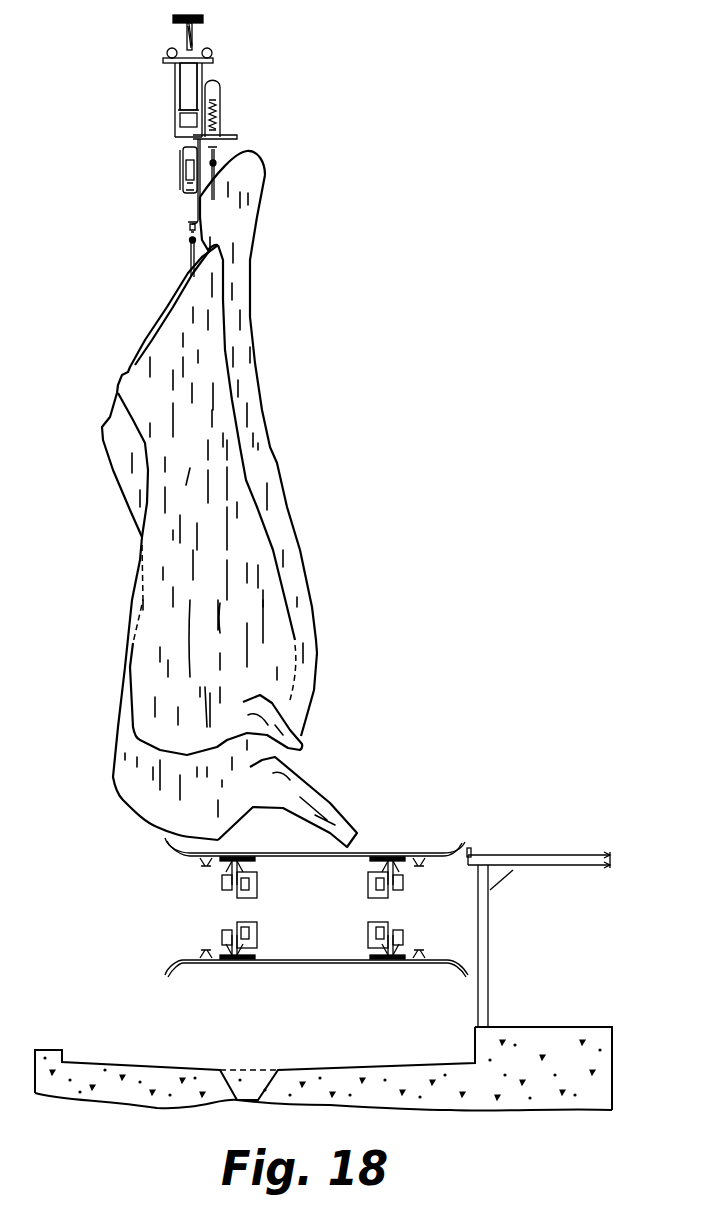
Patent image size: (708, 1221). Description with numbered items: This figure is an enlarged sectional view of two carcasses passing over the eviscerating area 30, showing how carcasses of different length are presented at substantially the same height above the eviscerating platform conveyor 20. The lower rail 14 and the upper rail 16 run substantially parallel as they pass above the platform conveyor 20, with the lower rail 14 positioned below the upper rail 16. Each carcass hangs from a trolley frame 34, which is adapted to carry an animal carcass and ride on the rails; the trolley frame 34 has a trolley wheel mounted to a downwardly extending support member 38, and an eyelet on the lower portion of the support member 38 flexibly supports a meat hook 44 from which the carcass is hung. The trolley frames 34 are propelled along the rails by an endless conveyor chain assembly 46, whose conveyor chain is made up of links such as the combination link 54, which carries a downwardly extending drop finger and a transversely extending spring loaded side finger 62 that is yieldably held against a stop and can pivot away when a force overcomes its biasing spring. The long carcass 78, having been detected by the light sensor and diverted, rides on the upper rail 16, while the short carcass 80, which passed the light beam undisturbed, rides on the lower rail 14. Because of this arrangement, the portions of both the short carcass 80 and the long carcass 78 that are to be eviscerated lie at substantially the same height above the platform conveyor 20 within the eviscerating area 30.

The lower rail 14 is at (180, 195).
The upper rail 16 is at (217, 112).
The eviscerating platform conveyor 20 is at (365, 853).
The eviscerating area 30 is at (420, 817).
The trolley frame 34 is at (232, 90).
The support member 38 is at (218, 123).
The meat hook 44 is at (213, 185).
The endless conveyor chain assembly 46 is at (213, 205).
The combination link 54 is at (193, 147).
The side finger 62 is at (237, 137).
The long carcass 78 is at (320, 637).
The short carcass 80 is at (277, 585).